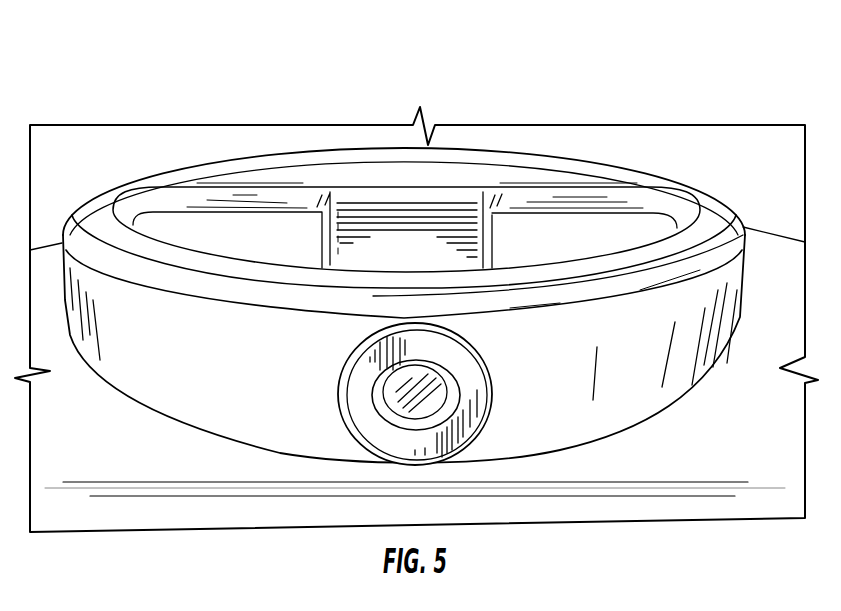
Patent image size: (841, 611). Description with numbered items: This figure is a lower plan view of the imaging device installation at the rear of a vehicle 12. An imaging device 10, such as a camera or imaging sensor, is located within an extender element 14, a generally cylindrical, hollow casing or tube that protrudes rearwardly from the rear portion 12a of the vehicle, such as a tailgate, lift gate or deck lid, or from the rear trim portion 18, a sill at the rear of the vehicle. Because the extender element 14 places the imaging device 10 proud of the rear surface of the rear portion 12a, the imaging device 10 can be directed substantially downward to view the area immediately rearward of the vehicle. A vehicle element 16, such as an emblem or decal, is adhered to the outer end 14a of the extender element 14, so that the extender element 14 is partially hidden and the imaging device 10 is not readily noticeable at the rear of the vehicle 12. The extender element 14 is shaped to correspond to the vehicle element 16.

The imaging device 10 is at (398, 452).
The vehicle 12 is at (278, 84).
The rear portion 12a is at (654, 152).
The extender element 14 is at (642, 383).
The outer end 14a is at (205, 235).
The vehicle element 16 is at (458, 172).
The trim portion 18 is at (765, 288).